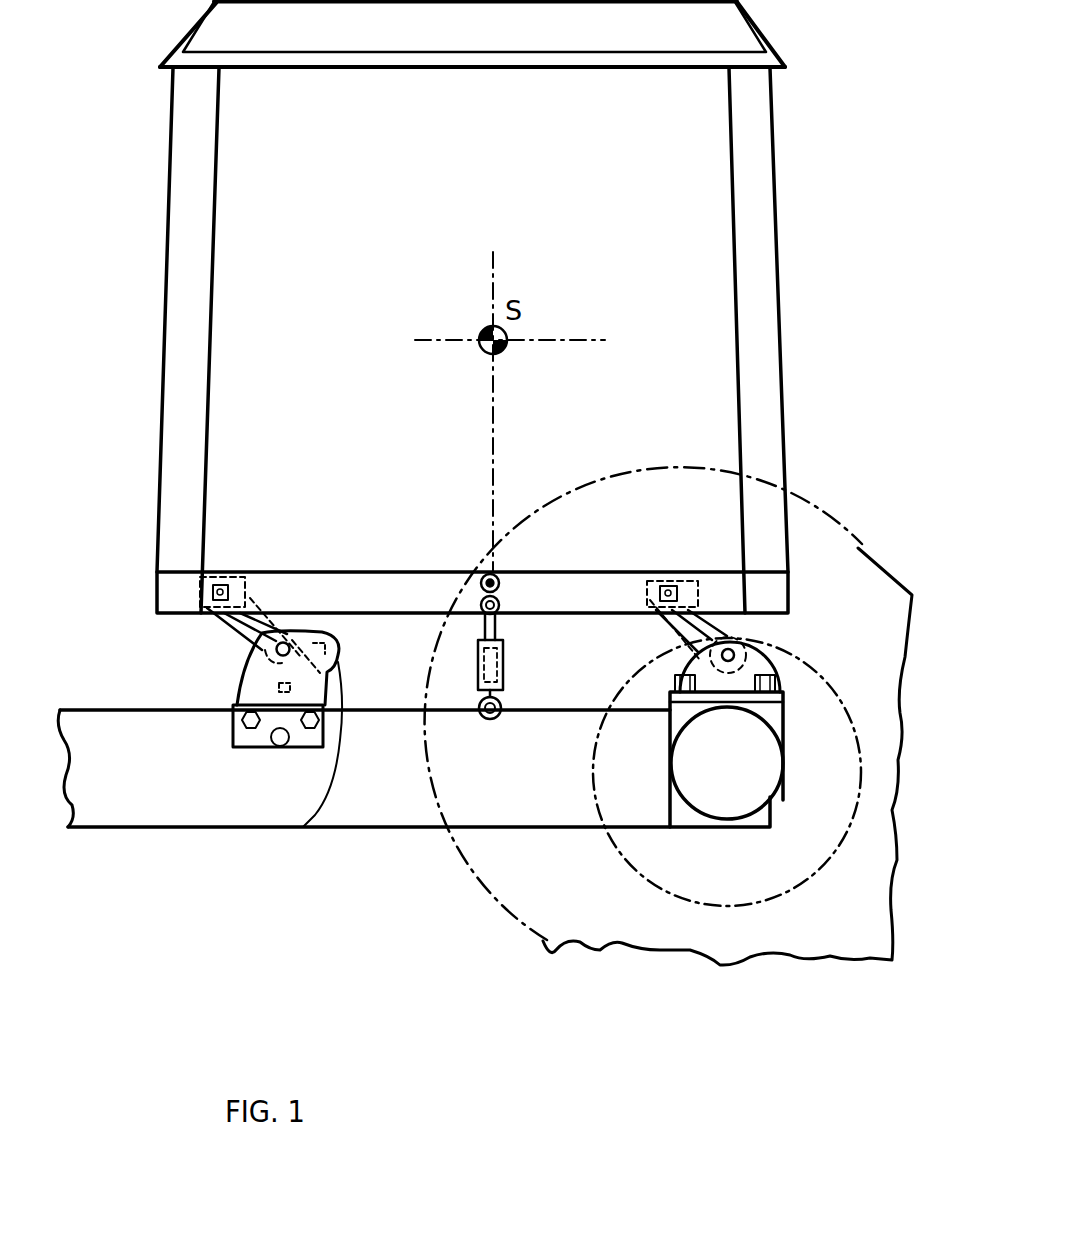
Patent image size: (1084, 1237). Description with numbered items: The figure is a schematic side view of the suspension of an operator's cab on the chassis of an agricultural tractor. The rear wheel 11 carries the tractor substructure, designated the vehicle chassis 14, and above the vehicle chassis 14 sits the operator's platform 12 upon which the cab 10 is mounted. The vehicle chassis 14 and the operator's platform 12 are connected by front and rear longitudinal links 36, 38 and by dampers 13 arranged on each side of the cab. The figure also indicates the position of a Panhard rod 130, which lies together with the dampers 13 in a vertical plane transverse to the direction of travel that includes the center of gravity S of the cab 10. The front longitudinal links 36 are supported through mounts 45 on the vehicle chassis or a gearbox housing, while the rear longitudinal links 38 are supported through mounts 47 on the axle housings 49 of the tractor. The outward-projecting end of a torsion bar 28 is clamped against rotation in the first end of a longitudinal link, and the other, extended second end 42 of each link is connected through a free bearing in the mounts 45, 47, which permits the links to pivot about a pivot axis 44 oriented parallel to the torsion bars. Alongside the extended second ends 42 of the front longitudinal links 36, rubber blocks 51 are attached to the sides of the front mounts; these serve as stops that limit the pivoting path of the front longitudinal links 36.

The cab 10 is at (703, 176).
The rear wheel 11 is at (792, 880).
The operator's platform 12 is at (385, 585).
The damper 13 is at (477, 683).
The vehicle chassis 14 is at (400, 800).
The torsion bar 28 is at (222, 578).
The front longitudinal link 36 is at (243, 630).
The rear longitudinal link 38 is at (679, 630).
The second end 42 is at (297, 671).
The pivot axis 44 is at (285, 643).
The mount 45 is at (240, 677).
The mount 47 is at (757, 665).
The axle housing 49 is at (720, 792).
The rubber block 51 is at (288, 690).
The Panhard rod 130 is at (487, 568).